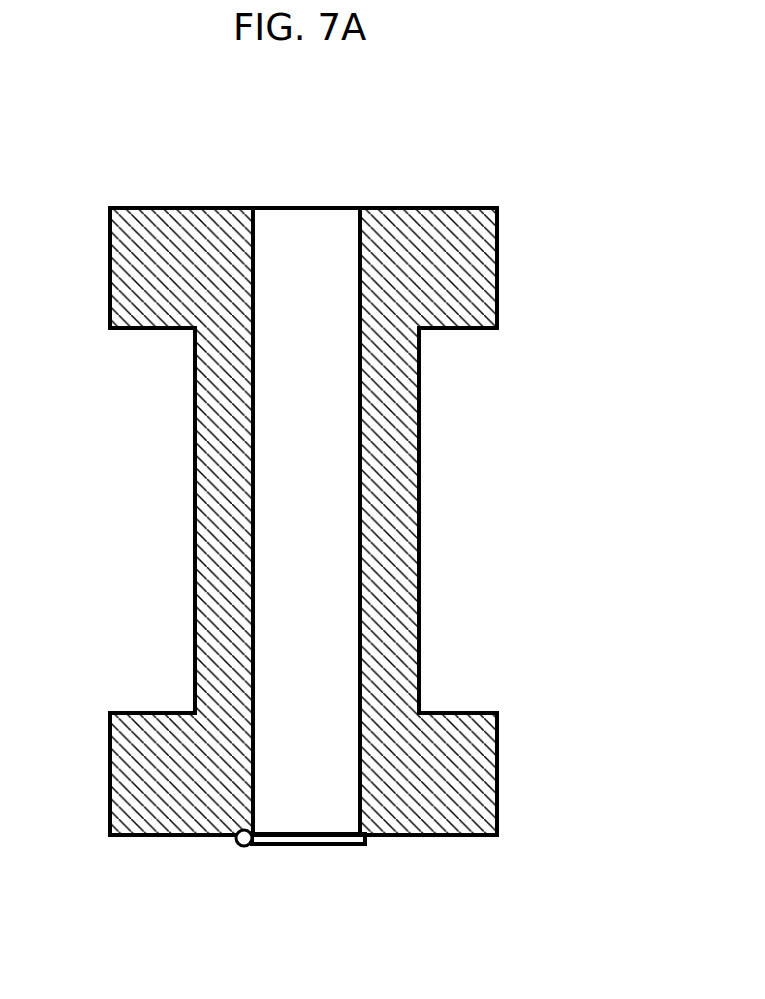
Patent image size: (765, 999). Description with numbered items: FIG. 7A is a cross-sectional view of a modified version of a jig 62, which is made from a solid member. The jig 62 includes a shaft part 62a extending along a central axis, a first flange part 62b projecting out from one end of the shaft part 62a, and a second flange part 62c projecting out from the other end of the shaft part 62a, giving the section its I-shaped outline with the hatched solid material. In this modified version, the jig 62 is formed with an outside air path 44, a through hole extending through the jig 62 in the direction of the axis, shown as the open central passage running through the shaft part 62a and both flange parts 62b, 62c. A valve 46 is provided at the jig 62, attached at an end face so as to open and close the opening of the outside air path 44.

The jig 62 is at (321, 154).
The shaft part 62a is at (422, 528).
The first flange part 62b is at (468, 203).
The second flange part 62c is at (453, 712).
The outside air path 44 is at (278, 570).
The valve 46 is at (327, 852).